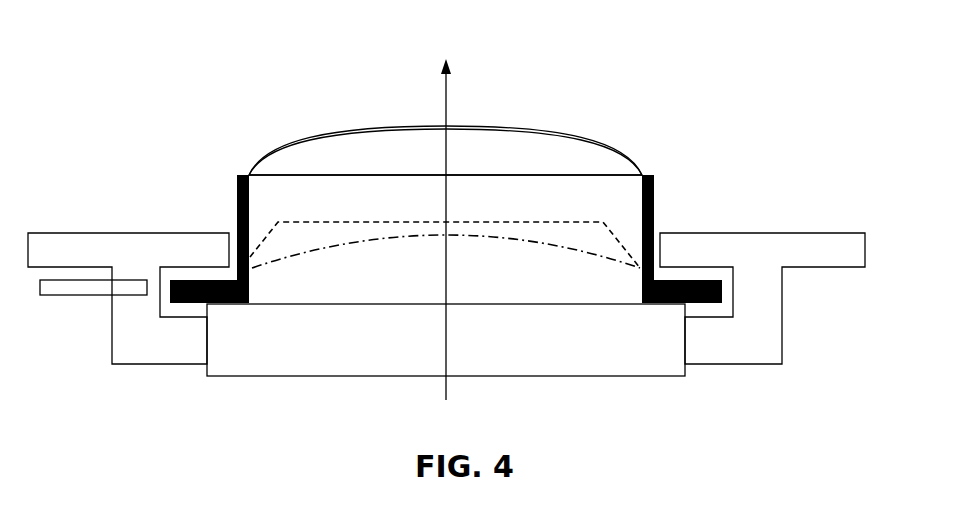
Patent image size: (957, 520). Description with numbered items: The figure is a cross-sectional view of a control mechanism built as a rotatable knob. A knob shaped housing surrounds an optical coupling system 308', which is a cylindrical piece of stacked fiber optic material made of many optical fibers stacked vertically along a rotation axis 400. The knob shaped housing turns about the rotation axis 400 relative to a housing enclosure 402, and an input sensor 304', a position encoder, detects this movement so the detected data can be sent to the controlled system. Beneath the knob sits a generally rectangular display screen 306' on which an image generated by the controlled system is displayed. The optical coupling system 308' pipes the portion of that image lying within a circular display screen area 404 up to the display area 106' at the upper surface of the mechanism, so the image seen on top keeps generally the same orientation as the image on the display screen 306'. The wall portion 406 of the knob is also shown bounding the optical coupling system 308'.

The rotation axis 400 is at (446, 98).
The display area 106' is at (445, 128).
The side wall 406 is at (235, 175).
The optical coupling system 308' is at (507, 221).
The housing enclosure 402 is at (157, 233).
The input sensor 304' is at (90, 319).
The display screen 306' is at (531, 340).
The display screen area 404 is at (518, 237).